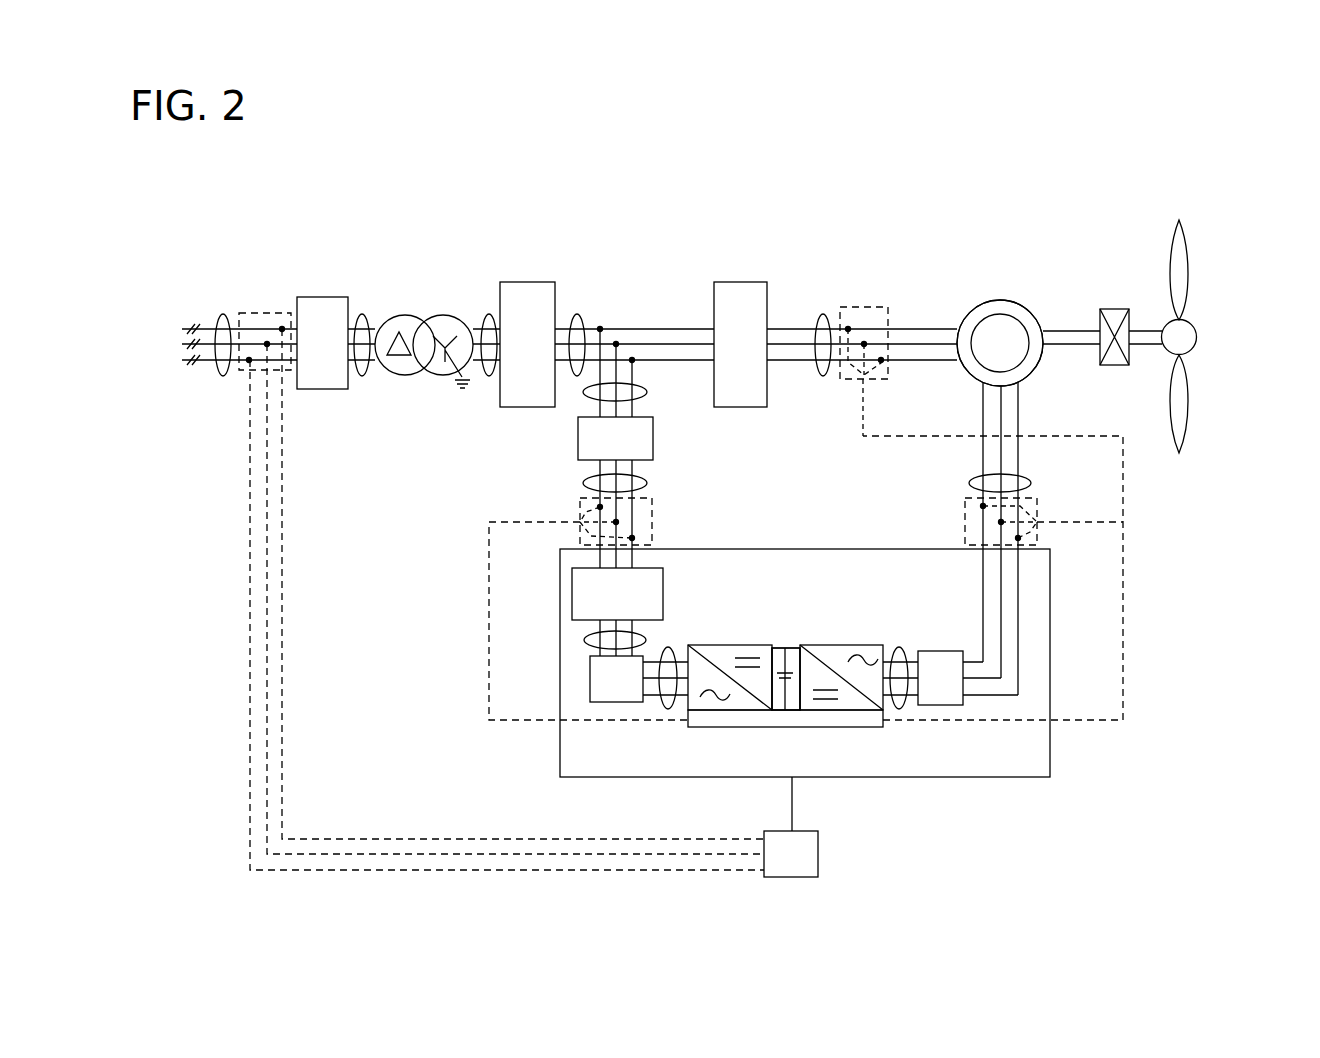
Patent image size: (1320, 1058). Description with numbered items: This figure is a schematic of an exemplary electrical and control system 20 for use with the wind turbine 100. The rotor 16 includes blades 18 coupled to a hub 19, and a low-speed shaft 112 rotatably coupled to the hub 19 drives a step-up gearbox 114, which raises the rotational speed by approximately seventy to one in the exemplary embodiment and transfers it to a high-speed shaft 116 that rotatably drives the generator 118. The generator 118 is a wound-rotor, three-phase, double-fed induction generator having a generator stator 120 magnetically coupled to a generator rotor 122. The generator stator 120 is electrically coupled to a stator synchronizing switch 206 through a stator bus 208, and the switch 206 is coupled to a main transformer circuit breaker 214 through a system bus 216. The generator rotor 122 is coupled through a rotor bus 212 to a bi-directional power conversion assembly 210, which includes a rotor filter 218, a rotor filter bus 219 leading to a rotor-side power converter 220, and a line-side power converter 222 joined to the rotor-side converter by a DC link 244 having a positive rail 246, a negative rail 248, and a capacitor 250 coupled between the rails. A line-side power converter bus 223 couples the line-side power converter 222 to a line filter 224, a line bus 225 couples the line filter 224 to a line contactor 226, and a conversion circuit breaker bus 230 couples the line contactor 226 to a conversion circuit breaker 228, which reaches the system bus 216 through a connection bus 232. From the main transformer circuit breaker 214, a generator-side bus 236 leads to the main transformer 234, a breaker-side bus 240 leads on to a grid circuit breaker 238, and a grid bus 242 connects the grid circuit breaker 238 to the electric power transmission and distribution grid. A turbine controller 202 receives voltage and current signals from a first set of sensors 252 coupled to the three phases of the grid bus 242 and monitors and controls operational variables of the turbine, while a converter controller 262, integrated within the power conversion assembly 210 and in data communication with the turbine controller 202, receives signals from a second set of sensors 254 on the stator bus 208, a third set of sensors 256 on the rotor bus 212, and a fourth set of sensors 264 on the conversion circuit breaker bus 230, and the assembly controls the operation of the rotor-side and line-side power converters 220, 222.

The electrical and control system 20 is at (273, 187).
The wind turbine 100 is at (1166, 203).
The rotor 16 is at (1203, 313).
The blades 18 is at (1188, 272).
The hub 19 is at (1197, 337).
The low-speed shaft 112 is at (1142, 331).
The step-up gearbox 114 is at (1112, 309).
The high-speed shaft 116 is at (1069, 331).
The generator 118 is at (1002, 297).
The generator stator 120 is at (1001, 300).
The generator rotor 122 is at (993, 325).
The turbine controller 202 is at (775, 868).
The stator synchronizing switch 206 is at (741, 282).
The stator bus 208 is at (823, 314).
The power conversion assembly 210 is at (1123, 660).
The rotor bus 212 is at (1031, 483).
The main transformer circuit breaker 214 is at (528, 282).
The system bus 216 is at (577, 313).
The rotor filter 218 is at (938, 660).
The rotor filter bus 219 is at (899, 648).
The rotor-side power converter 220 is at (885, 705).
The line-side power converter 222 is at (702, 712).
The line-side power converter bus 223 is at (668, 648).
The line filter 224 is at (590, 680).
The line bus 225 is at (584, 640).
The line contactor 226 is at (572, 595).
The conversion circuit breaker 228 is at (653, 440).
The conversion circuit breaker bus 230 is at (647, 483).
The connection bus 232 is at (647, 392).
The main transformer 234 is at (443, 315).
The generator-side bus 236 is at (489, 313).
The grid circuit breaker 238 is at (318, 297).
The breaker-side bus 240 is at (362, 314).
The grid bus 242 is at (223, 313).
The DC link 244 is at (790, 645).
The positive rail 246 is at (792, 648).
The negative rail 248 is at (795, 711).
The capacitor 250 is at (784, 670).
The first set of voltage and electric current sensors 252 is at (240, 382).
The second set of voltage and electric current sensors 254 is at (878, 307).
The third set of voltage and electric current sensors 256 is at (960, 522).
The converter controller 262 is at (843, 722).
The fourth set of voltage and electric current sensors 264 is at (652, 522).